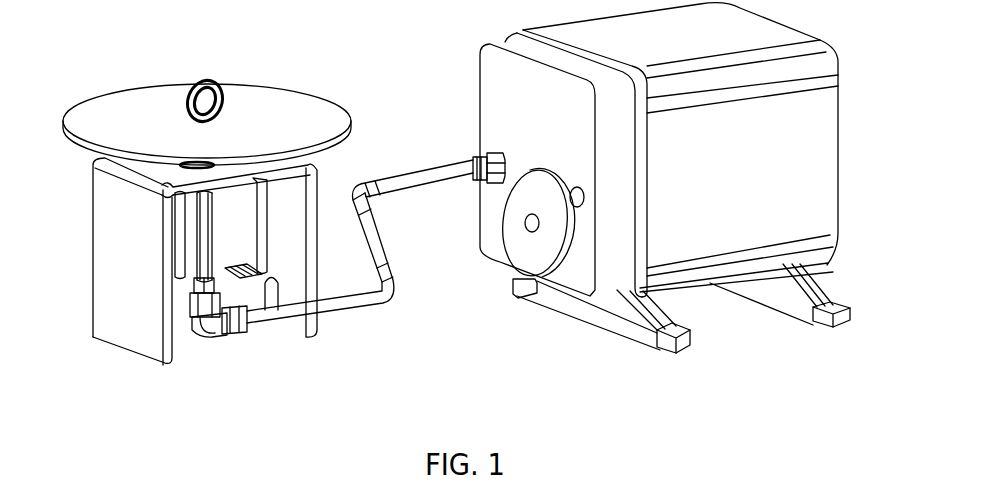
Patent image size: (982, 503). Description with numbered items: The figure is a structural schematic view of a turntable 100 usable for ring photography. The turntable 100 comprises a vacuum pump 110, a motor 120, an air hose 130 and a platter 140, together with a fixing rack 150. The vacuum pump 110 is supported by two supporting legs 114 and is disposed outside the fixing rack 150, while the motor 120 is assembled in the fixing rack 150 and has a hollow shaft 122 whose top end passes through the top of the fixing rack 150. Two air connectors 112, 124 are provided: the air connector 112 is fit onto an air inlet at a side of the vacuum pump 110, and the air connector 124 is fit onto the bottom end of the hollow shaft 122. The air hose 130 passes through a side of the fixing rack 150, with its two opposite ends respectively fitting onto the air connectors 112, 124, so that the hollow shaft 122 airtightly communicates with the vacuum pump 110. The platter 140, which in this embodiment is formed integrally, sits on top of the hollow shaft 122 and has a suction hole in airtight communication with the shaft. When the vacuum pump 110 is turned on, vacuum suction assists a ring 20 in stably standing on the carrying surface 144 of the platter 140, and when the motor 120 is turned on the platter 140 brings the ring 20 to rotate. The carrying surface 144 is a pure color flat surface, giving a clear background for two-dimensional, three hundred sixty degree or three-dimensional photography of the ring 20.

The turntable 100 is at (858, 449).
The vacuum pump 110 is at (822, 170).
The air connector 112 is at (493, 180).
The supporting legs 114 is at (623, 323).
The motor 120 is at (232, 244).
The hollow shaft 122 is at (200, 283).
The air connector 124 is at (227, 323).
The air hose 130 is at (358, 302).
The platter 140 is at (130, 100).
The carrying surface 144 is at (90, 120).
The fixing rack 150 is at (120, 333).
The ring 20 is at (207, 82).